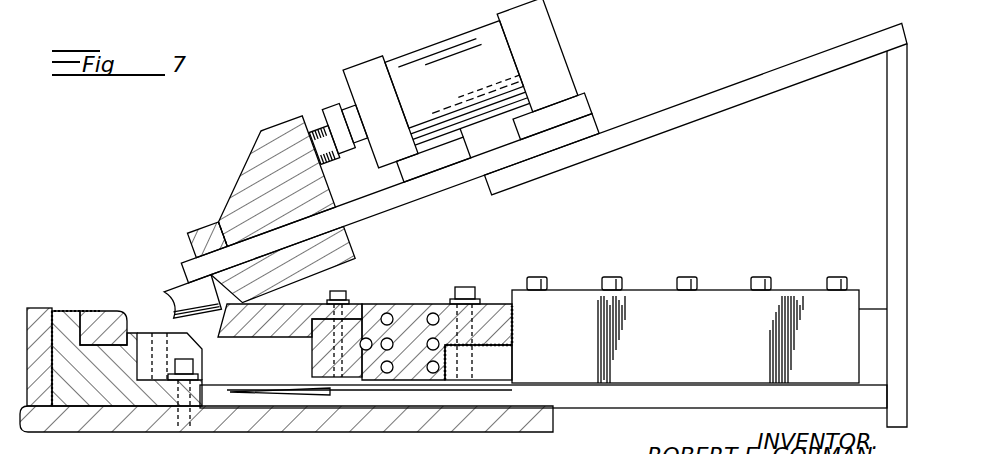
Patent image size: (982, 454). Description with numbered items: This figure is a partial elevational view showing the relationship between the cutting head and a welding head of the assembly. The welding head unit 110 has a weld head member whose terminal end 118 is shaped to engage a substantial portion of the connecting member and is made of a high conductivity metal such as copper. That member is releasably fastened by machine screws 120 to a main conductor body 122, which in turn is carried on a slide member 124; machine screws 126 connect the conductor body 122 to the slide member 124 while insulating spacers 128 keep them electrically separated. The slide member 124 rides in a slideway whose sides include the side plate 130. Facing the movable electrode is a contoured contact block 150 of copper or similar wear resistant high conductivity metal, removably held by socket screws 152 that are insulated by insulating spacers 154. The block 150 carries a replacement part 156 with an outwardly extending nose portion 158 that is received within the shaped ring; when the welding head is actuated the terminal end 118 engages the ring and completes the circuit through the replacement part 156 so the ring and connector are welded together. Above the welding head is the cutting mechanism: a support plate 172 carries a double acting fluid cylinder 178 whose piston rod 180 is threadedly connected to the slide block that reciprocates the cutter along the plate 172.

The welding head unit 110 is at (686, 256).
The terminal end 118 is at (240, 306).
The machine screws 120 is at (350, 304).
The main conductor body 122 is at (407, 304).
The slide member 124 is at (492, 370).
The machine screws 126 is at (472, 286).
The insulating spacers 128 is at (497, 313).
The side plate 130 is at (673, 372).
The contact block 150 is at (98, 410).
The socket screws 152 is at (195, 364).
The insulating spacers 154 is at (242, 392).
The replacement part 156 is at (108, 310).
The nose portion 158 is at (143, 280).
The support plate 172 is at (420, 199).
The double acting fluid cylinder 178 is at (458, 33).
The piston rod 180 is at (325, 116).